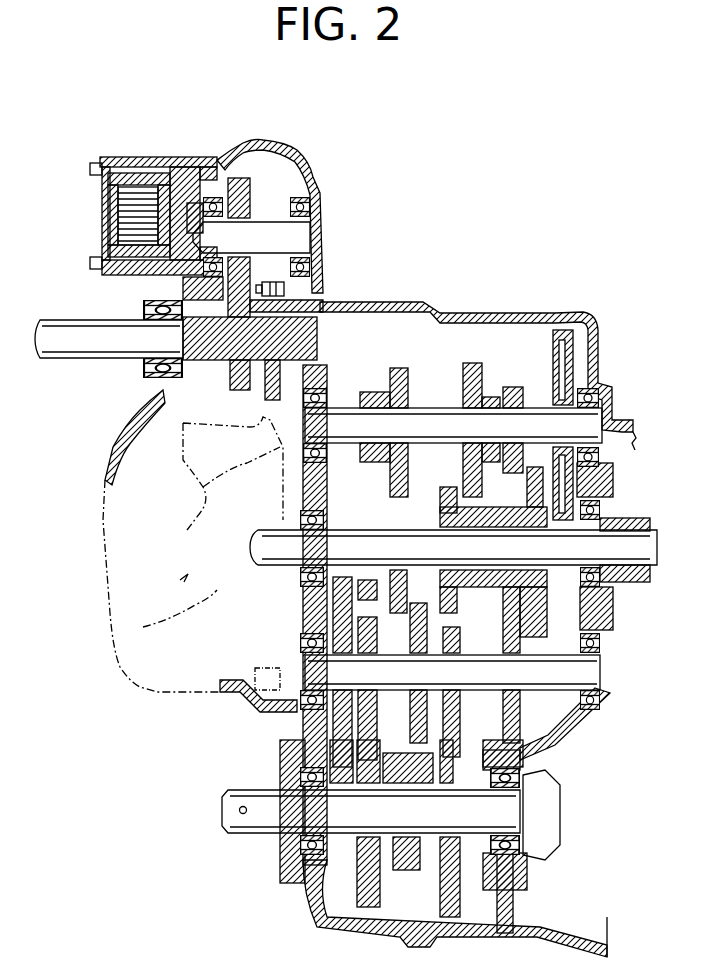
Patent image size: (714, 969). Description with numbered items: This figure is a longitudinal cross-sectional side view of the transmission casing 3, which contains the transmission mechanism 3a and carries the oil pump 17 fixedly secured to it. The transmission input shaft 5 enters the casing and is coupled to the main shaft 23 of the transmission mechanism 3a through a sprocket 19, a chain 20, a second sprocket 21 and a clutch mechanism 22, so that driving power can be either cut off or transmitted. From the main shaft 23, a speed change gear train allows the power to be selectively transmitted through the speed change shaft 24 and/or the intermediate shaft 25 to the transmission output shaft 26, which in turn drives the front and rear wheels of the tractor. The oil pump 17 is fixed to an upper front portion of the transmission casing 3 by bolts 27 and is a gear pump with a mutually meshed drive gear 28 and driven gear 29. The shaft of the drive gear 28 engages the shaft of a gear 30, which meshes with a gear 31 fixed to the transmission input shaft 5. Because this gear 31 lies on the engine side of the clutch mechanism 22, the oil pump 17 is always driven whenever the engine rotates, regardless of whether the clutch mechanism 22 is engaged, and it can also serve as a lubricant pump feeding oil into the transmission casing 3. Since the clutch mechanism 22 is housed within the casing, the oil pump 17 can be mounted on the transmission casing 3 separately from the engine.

The transmission casing 3 is at (487, 307).
The transmission mechanism 3a is at (523, 362).
The transmission input shaft 5 is at (113, 332).
The oil pump 17 is at (158, 140).
The sprocket 19 is at (285, 298).
The chain 20 is at (300, 270).
The sprocket 21 is at (220, 475).
The clutch mechanism 22 is at (143, 626).
The main shaft 23 is at (450, 564).
The speed change shaft 24 is at (450, 444).
The intermediate shaft 25 is at (450, 684).
The transmission output shaft 26 is at (450, 824).
The bolts 27 is at (98, 160).
The drive gear 28 is at (122, 230).
The driven gear 29 is at (125, 203).
The gear 30 is at (253, 200).
The gear 31 is at (233, 377).